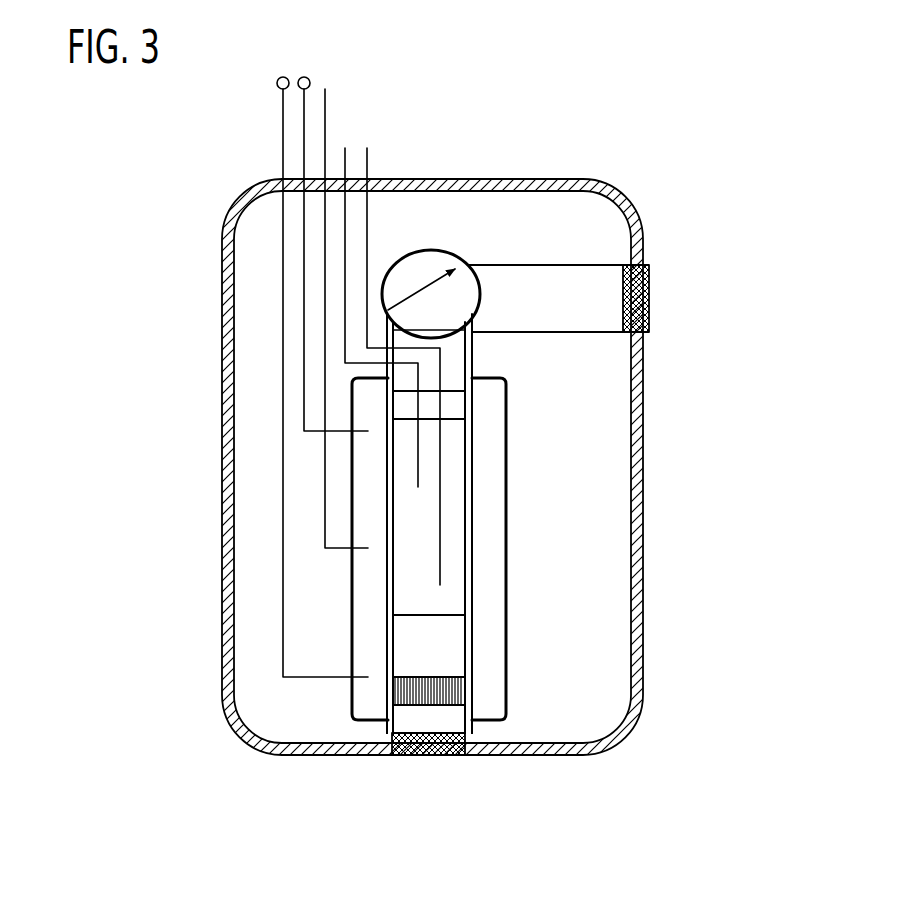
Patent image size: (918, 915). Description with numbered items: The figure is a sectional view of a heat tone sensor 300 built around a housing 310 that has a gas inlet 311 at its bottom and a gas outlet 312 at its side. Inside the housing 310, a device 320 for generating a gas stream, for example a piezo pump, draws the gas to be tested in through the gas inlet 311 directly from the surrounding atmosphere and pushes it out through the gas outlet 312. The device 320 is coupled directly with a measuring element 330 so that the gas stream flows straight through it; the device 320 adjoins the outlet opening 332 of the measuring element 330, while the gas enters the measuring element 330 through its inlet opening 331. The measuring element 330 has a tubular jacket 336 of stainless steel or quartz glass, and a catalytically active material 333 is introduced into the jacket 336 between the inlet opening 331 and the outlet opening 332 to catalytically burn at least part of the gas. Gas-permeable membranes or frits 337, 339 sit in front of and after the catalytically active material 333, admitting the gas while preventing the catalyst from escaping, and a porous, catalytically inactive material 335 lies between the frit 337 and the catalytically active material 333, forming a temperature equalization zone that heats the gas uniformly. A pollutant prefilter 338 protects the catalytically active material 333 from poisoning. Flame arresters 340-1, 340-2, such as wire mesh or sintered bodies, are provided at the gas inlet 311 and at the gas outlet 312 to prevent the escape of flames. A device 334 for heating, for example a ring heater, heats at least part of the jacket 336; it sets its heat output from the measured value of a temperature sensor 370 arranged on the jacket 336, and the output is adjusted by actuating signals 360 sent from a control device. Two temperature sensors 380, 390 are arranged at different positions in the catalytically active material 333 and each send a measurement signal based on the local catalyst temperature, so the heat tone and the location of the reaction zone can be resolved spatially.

The heat tone sensor 300 is at (180, 670).
The housing 310 is at (498, 178).
The gas inlet 311 is at (430, 757).
The gas outlet 312 is at (586, 285).
The device for generating a gas stream 320 is at (437, 272).
The measuring element 330 is at (495, 365).
The inlet opening 331 is at (453, 727).
The outlet opening 332 is at (455, 344).
The catalytically active material 333 is at (450, 545).
The device for heating 334 is at (492, 500).
The porous, catalytically inactive material 335 is at (449, 663).
The tubular jacket 336 is at (388, 637).
The gas-permeable membrane or frit 337 is at (428, 690).
The pollutant prefilter 338 is at (405, 725).
The gas-permeable membrane or frit 339 is at (455, 405).
The flame arrester 340-1 is at (452, 744).
The flame arrester 340-2 is at (650, 300).
The actuating signals 360 is at (311, 73).
The temperature sensor 370 is at (325, 218).
The temperature sensor 380 is at (375, 276).
The temperature sensor 390 is at (374, 143).